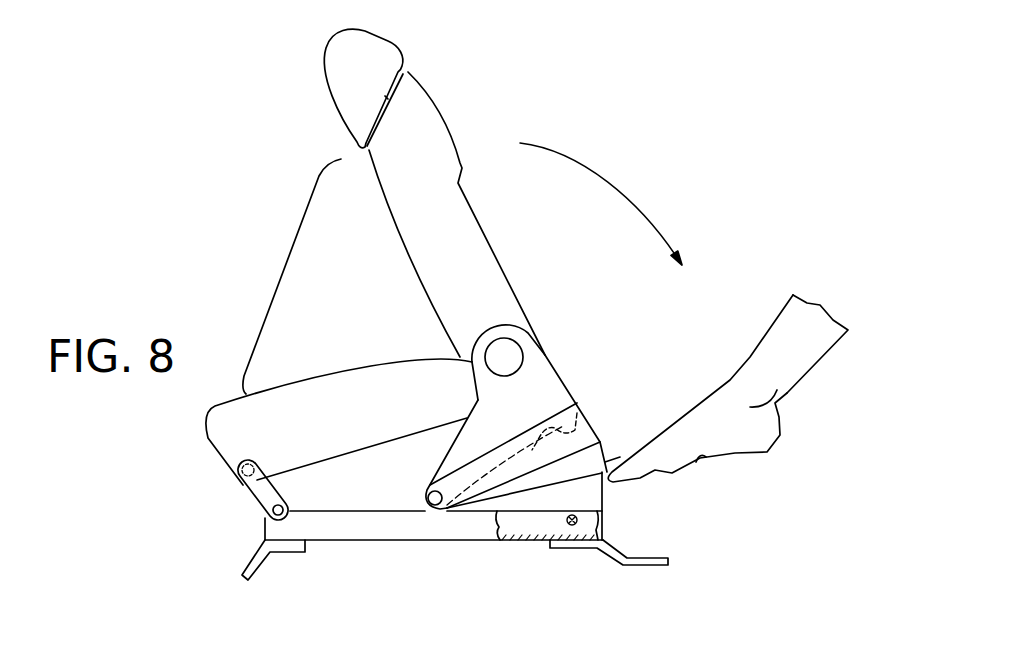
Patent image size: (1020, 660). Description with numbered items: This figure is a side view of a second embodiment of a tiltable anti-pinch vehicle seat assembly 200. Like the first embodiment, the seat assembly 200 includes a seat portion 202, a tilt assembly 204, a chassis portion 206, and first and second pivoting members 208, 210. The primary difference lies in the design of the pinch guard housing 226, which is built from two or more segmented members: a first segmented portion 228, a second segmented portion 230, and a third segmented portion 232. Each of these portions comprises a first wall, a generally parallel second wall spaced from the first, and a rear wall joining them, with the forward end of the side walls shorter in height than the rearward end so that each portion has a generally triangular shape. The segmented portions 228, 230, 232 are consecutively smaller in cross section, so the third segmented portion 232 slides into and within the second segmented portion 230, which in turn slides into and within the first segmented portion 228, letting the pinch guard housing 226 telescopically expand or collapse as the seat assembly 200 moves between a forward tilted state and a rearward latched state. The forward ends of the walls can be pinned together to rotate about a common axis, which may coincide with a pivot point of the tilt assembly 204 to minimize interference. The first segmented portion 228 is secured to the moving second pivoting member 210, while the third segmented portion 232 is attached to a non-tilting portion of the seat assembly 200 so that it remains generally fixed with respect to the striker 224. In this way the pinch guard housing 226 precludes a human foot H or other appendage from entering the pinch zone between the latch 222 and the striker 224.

The tiltable anti-pinch vehicle seat assembly 200 is at (245, 120).
The seat portion 202 is at (265, 290).
The tilt assembly 204 is at (258, 507).
The chassis portion 206 is at (643, 567).
The first pivoting member 208 is at (260, 490).
The second pivoting member 210 is at (545, 372).
The latch 222 is at (545, 435).
The striker 224 is at (573, 526).
The pinch guard housing 226 is at (630, 405).
The first segmented portion 228 is at (597, 410).
The second segmented portion 230 is at (603, 455).
The third segmented portion 232 is at (603, 497).
The human foot H is at (795, 367).